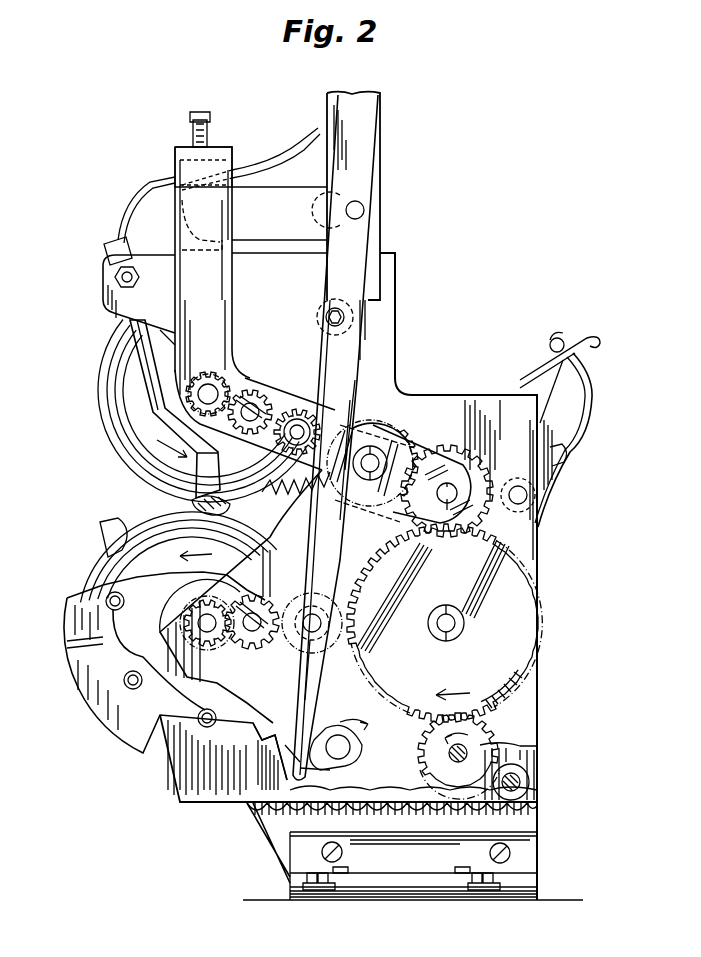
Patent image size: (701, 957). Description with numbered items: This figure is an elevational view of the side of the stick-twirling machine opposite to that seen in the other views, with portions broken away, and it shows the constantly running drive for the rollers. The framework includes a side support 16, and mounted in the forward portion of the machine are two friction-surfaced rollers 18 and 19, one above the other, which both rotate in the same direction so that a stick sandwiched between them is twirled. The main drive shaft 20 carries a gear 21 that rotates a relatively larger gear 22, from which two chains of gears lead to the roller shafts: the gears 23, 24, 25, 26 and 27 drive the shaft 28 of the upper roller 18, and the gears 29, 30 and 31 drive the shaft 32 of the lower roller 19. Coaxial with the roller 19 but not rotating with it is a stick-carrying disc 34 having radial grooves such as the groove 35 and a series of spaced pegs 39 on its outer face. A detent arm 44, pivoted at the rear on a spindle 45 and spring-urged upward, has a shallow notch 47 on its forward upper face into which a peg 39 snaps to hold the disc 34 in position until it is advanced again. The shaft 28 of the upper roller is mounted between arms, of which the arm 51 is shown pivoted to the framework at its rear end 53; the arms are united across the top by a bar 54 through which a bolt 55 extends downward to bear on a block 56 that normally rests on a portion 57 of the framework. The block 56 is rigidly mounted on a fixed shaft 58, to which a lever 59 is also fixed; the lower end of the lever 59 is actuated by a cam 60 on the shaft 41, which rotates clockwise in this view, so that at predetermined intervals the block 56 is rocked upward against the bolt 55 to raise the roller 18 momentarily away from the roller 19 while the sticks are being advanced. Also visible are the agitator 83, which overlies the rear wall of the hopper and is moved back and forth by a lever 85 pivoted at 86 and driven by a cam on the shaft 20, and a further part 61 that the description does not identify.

The side support 16 is at (390, 374).
The roller 18 is at (112, 436).
The roller 19 is at (128, 560).
The main drive shaft 20 is at (468, 752).
The gear 21 is at (494, 730).
The gear 22 is at (444, 623).
The gear 23 is at (465, 476).
The gear 24 is at (393, 426).
The gear 25 is at (296, 418).
The gear 26 is at (253, 400).
The gear 27 is at (212, 384).
The shaft 28 is at (200, 393).
The gear 29 is at (300, 598).
The gear 30 is at (246, 610).
The gear 31 is at (207, 640).
The shaft 32 is at (198, 624).
The disc 34 is at (110, 721).
The radial groove 35 is at (113, 522).
The pegs 39 is at (133, 670).
The shaft 41 is at (352, 746).
The detent arm 44 is at (180, 786).
The spindle 45 is at (530, 785).
The notch 47 is at (198, 722).
The arm 51 is at (215, 283).
The rear end 53 is at (447, 482).
The bar 54 is at (178, 150).
The bolt 55 is at (210, 120).
The block 56 is at (345, 190).
The portion of the framework 57 is at (196, 254).
The fixed shaft 58 is at (364, 212).
The lever 59 is at (345, 345).
The cam 60 is at (346, 766).
The follower arm 61 is at (166, 497).
The agitator 83 is at (548, 350).
The lever 85 is at (578, 420).
The pivot 86 is at (528, 496).